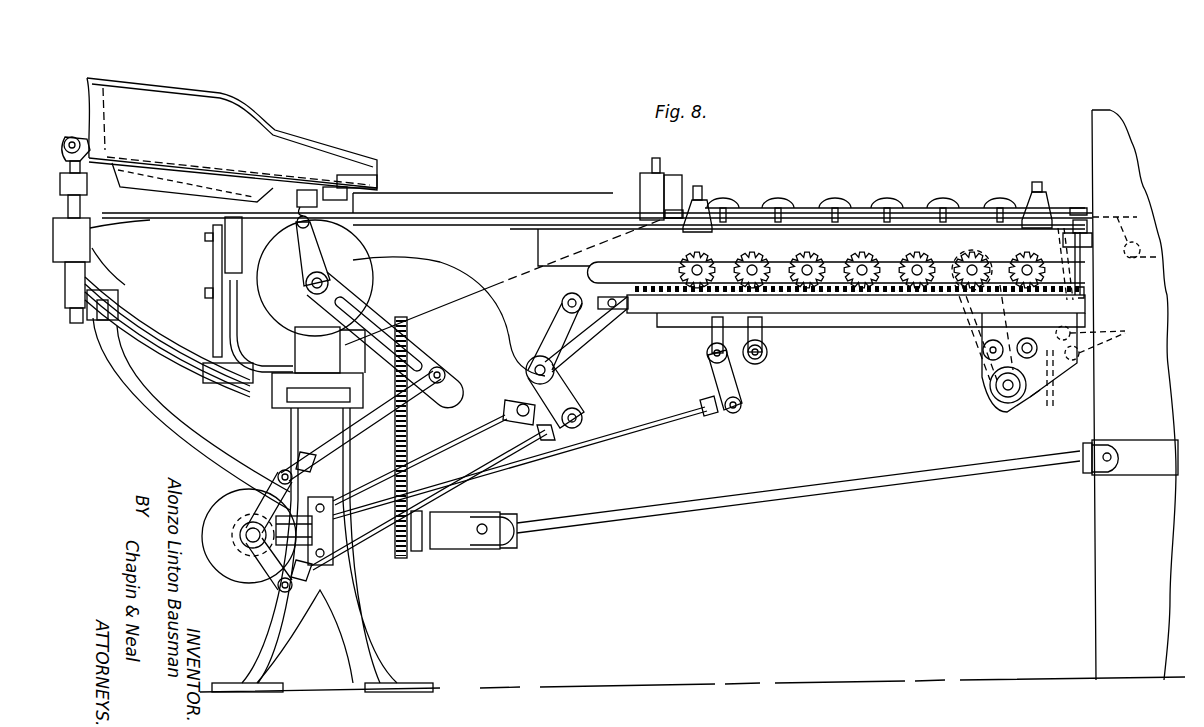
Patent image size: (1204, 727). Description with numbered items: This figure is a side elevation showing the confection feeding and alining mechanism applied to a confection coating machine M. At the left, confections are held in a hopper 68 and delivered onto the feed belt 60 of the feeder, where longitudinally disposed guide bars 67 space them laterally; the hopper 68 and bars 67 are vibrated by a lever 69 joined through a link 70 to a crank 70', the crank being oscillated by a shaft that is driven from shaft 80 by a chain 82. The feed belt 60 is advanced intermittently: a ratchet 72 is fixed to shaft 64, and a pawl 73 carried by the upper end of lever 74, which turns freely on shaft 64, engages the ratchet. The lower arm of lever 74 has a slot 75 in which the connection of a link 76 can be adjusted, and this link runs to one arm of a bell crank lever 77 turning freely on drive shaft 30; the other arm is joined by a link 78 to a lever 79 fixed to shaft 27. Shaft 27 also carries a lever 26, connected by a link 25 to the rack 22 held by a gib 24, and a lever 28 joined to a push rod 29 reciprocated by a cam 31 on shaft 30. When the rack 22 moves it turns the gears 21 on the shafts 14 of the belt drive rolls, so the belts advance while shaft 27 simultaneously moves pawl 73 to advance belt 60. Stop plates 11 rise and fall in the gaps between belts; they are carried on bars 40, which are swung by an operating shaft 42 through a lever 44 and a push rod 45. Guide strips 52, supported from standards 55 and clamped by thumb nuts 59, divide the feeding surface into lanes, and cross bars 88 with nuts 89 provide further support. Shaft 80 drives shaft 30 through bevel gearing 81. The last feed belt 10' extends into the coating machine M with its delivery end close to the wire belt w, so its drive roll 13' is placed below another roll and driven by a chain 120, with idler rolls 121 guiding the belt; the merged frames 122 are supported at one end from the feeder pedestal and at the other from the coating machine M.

The hopper 68 is at (247, 148).
The pawl 73 is at (318, 212).
The guide bars 67 is at (485, 193).
The feed belt 60 is at (508, 228).
The lever 69 is at (224, 257).
The ratchet 72 is at (315, 278).
The shaft 64 is at (328, 258).
The lever 74 is at (372, 298).
The slot 75 is at (452, 386).
The link 76 is at (370, 420).
The cam 31 is at (215, 540).
The drive shaft 30 is at (236, 572).
The bevel gearing 81 is at (248, 516).
The bell crank lever 77 is at (275, 592).
The link 70 is at (187, 400).
The crank 70' is at (189, 331).
The chain 82 is at (407, 550).
The push rod 29 is at (452, 452).
The link 78 is at (470, 478).
The push rod 45 is at (470, 480).
The link 25 is at (560, 302).
The lever 26 is at (548, 325).
The shaft 27 is at (528, 362).
The lever 79 is at (572, 398).
The lever 28 is at (508, 405).
The rack 22 is at (668, 268).
The merged frames 122 is at (725, 259).
The shaft 14 is at (856, 264).
The gear 21 is at (960, 262).
The gib 24 is at (815, 333).
The bars 40 is at (887, 327).
The operating shaft 42 is at (707, 354).
The nuts 89 is at (766, 348).
The cross bars 88 is at (767, 356).
The lever 44 is at (735, 390).
The shaft 80 is at (618, 525).
The thumb nuts 59 is at (698, 200).
The stop plates 11 is at (860, 200).
The guide strips 52 is at (970, 210).
The standards 55 is at (1068, 205).
The coating machine M is at (1103, 132).
The wire belt w is at (1117, 217).
The chain 120 is at (975, 348).
The idler rolls 121 is at (1108, 340).
The drive roll 13' is at (1015, 417).
The feed belt 10' is at (1056, 424).